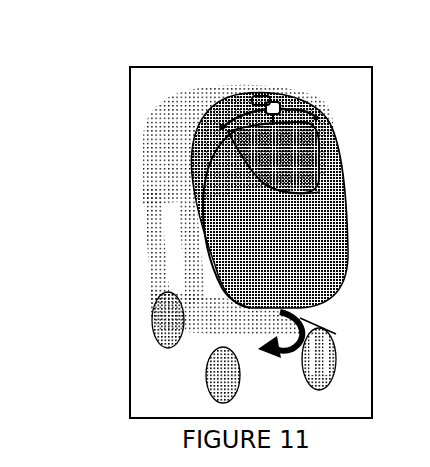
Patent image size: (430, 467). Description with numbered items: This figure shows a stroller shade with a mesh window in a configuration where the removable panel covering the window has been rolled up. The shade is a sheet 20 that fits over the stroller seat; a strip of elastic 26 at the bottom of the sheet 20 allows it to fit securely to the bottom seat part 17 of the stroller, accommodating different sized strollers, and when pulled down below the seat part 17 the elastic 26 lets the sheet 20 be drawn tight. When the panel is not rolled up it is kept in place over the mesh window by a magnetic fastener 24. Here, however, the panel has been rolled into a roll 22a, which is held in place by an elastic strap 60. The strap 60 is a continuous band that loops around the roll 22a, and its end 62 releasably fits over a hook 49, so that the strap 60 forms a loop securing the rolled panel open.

The bottom seat part 17 is at (212, 283).
The sheet 20 is at (218, 213).
The roll 22a is at (235, 130).
The magnetic fastener 24 is at (295, 195).
The strip of elastic 26 is at (302, 152).
The hook 49 is at (279, 100).
The elastic strap 60 is at (316, 103).
The end of strap 62 is at (246, 88).